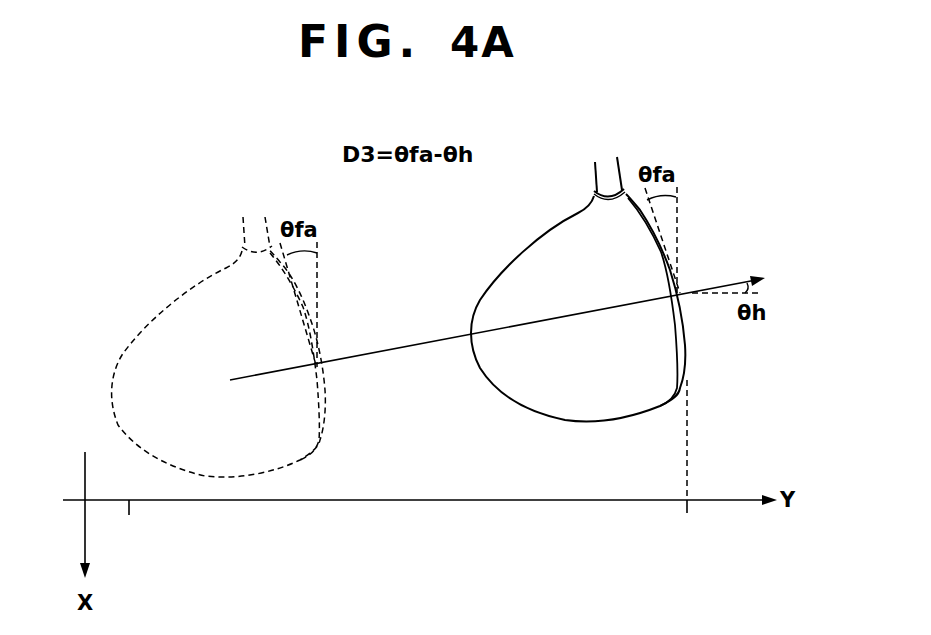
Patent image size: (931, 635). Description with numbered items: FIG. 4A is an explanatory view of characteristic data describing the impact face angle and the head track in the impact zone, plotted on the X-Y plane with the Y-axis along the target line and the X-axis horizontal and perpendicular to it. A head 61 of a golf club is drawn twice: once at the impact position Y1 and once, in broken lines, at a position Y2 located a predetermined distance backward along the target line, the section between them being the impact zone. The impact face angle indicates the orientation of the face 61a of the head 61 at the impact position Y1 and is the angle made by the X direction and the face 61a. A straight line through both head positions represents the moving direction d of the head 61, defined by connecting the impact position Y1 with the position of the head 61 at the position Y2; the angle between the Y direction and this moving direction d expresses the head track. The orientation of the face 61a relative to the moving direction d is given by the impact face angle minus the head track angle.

The head 61 is at (476, 262).
The face 61a is at (682, 338).
The moving direction d is at (420, 343).
The impact position Y1 is at (692, 461).
The position Y2 is at (132, 525).